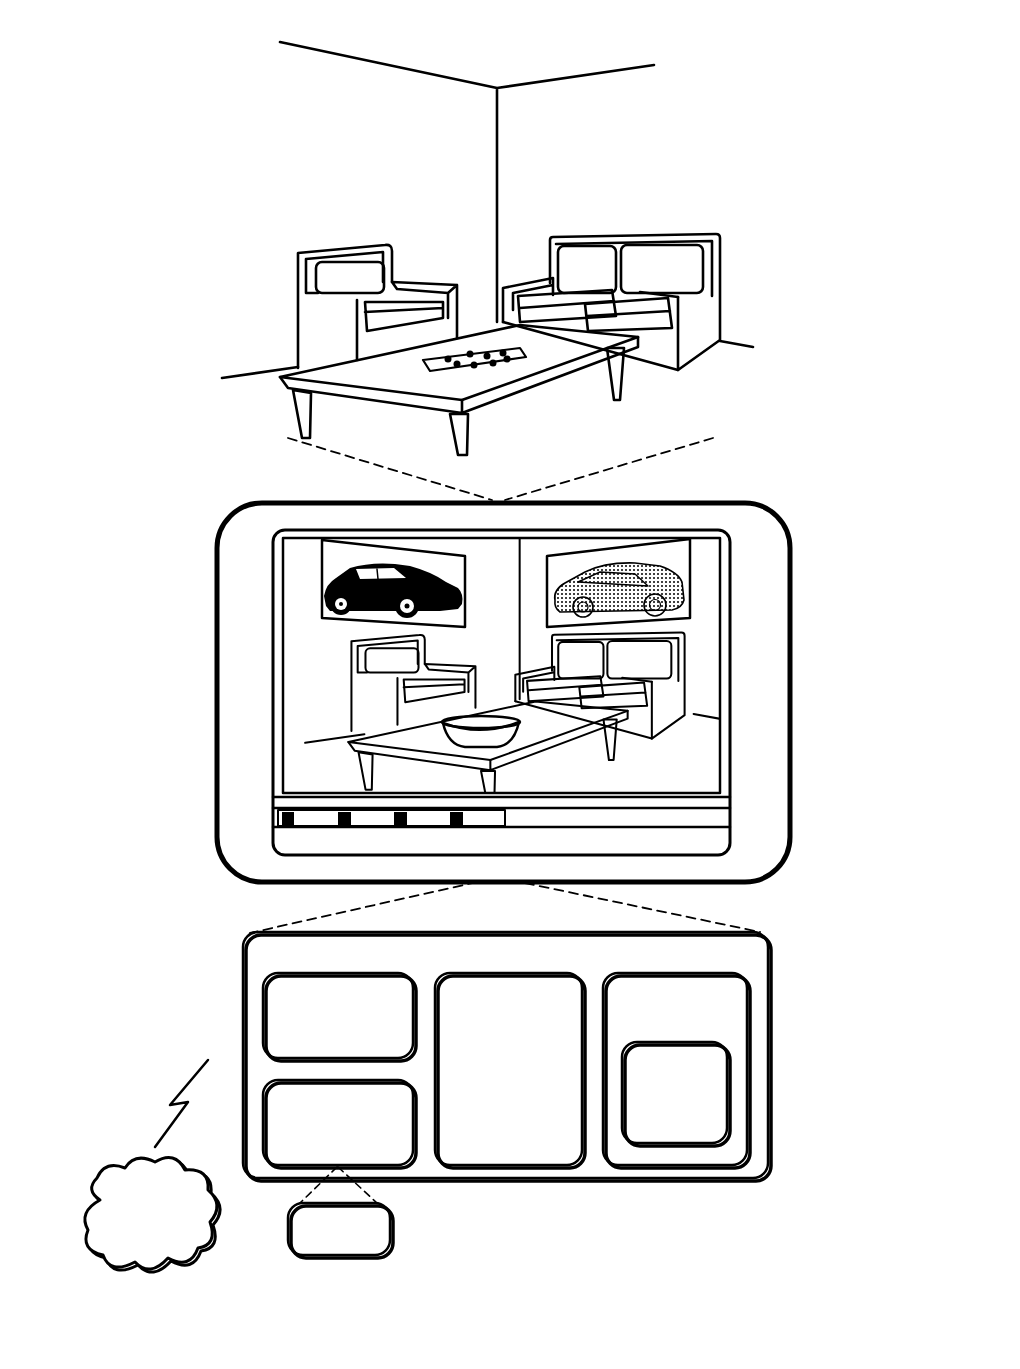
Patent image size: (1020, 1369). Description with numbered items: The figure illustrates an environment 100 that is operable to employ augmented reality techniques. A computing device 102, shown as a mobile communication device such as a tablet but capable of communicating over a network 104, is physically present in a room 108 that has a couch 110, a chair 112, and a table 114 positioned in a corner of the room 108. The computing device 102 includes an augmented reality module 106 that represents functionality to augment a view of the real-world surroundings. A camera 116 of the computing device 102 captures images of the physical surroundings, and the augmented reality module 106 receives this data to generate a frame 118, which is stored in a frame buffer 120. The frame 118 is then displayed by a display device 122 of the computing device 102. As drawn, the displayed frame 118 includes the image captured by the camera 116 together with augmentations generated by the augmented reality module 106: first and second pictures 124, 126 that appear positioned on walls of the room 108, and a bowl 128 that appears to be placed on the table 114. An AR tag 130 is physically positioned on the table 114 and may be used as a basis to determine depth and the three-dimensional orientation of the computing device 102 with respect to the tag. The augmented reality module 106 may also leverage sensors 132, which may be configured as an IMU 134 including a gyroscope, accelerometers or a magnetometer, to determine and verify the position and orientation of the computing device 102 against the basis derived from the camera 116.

The environment 100 is at (210, 70).
The computing device 102 is at (507, 1056).
The network 104 is at (152, 1166).
The augmented reality module 106 is at (510, 1070).
The room 108 is at (694, 140).
The couch 110 is at (722, 237).
The chair 112 is at (381, 245).
The table 114 is at (420, 418).
The camera 116 is at (339, 1017).
The frame 118 is at (676, 1094).
The frame buffer 120 is at (676, 1070).
The display device 122 is at (503, 678).
The first picture 124 is at (357, 539).
The second picture 126 is at (648, 539).
The bowl 128 is at (515, 738).
The AR tag 130 is at (525, 349).
The sensors 132 is at (339, 1124).
The IMU 134 is at (340, 1212).